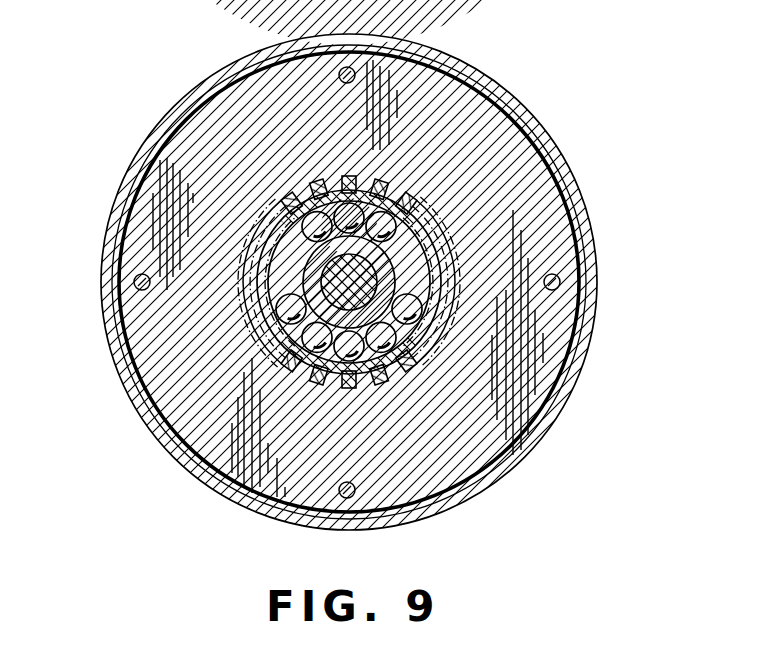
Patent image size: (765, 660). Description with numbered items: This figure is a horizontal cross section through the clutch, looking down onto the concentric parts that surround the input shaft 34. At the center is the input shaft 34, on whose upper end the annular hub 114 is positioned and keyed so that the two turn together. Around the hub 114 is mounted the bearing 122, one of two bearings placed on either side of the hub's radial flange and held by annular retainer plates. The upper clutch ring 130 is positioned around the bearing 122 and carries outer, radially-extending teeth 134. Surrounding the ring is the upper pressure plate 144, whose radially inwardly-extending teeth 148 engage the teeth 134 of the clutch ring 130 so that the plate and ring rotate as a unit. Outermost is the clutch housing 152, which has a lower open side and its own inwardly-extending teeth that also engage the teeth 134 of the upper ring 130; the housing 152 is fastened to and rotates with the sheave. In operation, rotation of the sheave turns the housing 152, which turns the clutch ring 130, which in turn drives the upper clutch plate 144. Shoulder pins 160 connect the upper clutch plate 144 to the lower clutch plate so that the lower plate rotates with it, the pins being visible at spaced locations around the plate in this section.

The input shaft 34 is at (374, 283).
The annular hub 114 is at (391, 257).
The bearing 122 is at (376, 195).
The upper clutch ring 130 is at (394, 373).
The teeth 134 is at (347, 173).
The teeth 148 is at (313, 384).
The upper pressure plate 144 is at (128, 382).
The clutch housing 152 is at (162, 443).
The shoulder pins 160 is at (135, 277).